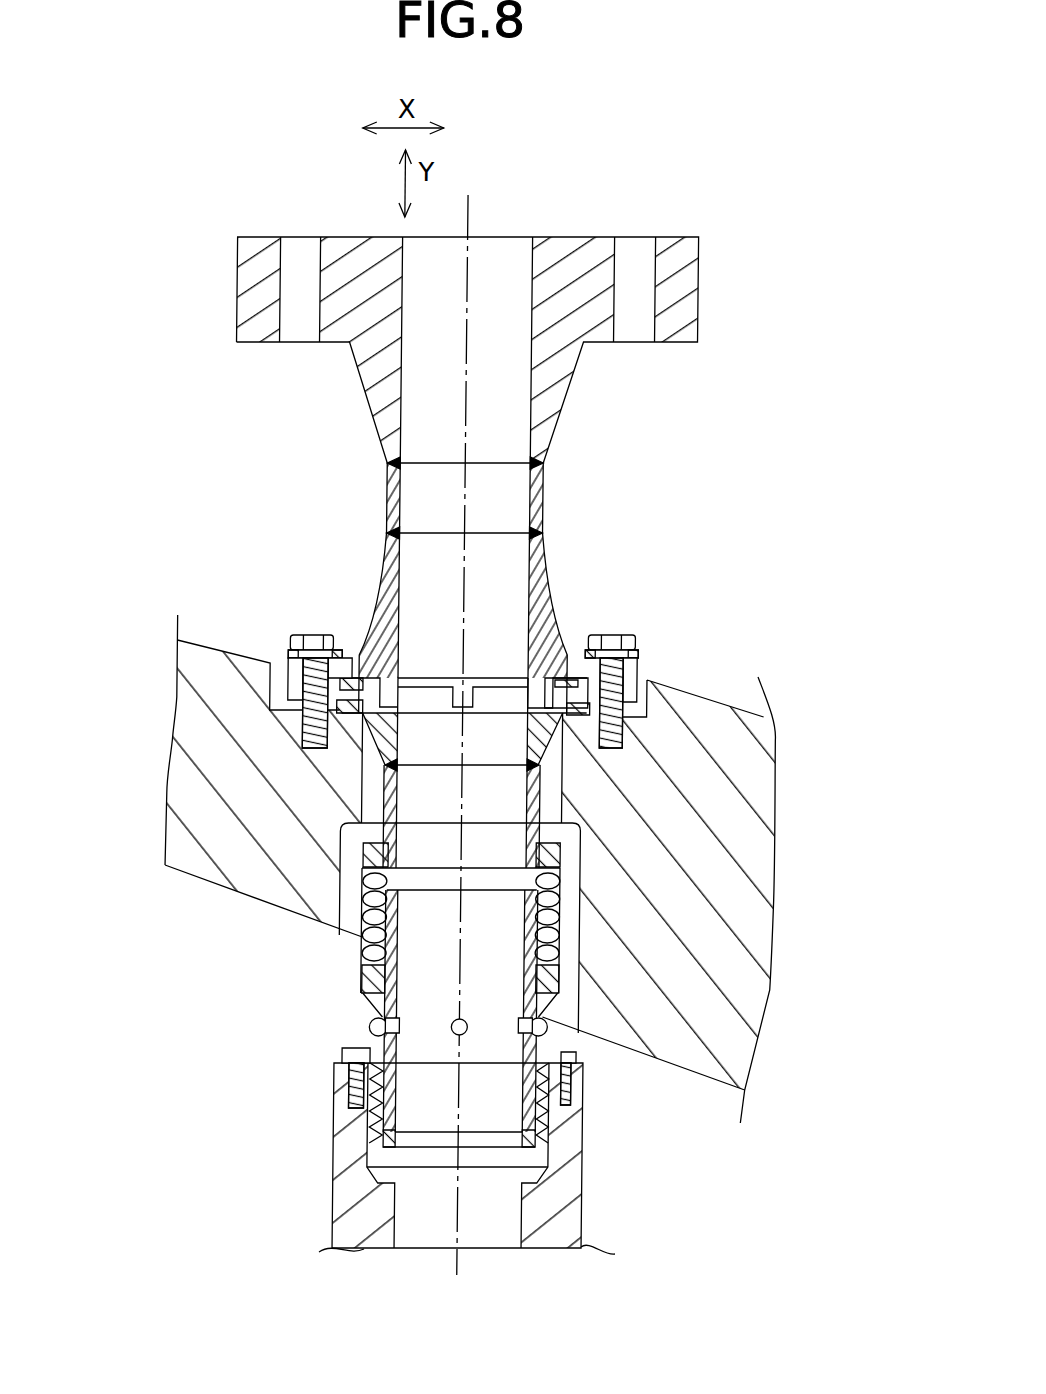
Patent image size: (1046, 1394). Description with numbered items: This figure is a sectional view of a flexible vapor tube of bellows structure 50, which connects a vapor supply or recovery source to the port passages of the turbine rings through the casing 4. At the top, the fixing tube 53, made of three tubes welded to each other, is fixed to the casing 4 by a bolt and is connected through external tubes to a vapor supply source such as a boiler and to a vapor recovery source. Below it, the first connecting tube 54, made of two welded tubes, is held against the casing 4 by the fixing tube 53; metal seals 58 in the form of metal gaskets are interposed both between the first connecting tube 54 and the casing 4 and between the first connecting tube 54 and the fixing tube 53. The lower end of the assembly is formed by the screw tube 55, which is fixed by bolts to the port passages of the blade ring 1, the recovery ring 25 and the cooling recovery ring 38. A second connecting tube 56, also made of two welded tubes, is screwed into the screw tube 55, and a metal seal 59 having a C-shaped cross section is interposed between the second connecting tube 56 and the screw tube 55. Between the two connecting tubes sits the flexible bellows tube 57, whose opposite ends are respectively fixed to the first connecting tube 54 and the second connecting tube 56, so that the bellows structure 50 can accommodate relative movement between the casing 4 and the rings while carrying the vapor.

The blade ring 1 is at (561, 1159).
The casing 4 is at (727, 718).
The recovery ring 25 is at (561, 1159).
The cooling recovery ring 38 is at (591, 1220).
The bellows structure 50 is at (190, 332).
The fixing tube 53 is at (556, 604).
The first connecting tube 54 is at (389, 797).
The screw tube 55 is at (338, 1070).
The second connecting tube 56 is at (380, 1038).
The bellows tube 57 is at (371, 913).
The metal seals 58 is at (358, 682).
The metal seal 59 is at (434, 1147).